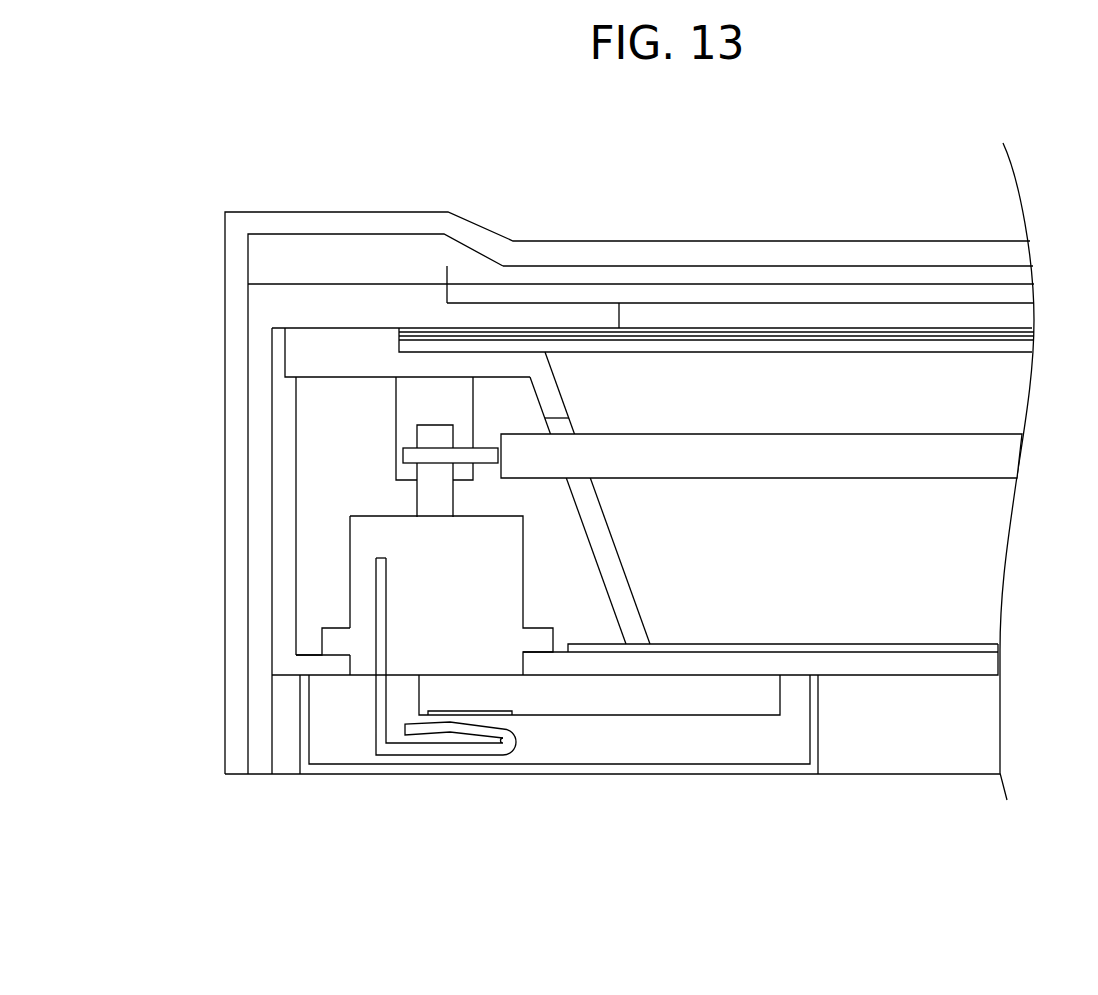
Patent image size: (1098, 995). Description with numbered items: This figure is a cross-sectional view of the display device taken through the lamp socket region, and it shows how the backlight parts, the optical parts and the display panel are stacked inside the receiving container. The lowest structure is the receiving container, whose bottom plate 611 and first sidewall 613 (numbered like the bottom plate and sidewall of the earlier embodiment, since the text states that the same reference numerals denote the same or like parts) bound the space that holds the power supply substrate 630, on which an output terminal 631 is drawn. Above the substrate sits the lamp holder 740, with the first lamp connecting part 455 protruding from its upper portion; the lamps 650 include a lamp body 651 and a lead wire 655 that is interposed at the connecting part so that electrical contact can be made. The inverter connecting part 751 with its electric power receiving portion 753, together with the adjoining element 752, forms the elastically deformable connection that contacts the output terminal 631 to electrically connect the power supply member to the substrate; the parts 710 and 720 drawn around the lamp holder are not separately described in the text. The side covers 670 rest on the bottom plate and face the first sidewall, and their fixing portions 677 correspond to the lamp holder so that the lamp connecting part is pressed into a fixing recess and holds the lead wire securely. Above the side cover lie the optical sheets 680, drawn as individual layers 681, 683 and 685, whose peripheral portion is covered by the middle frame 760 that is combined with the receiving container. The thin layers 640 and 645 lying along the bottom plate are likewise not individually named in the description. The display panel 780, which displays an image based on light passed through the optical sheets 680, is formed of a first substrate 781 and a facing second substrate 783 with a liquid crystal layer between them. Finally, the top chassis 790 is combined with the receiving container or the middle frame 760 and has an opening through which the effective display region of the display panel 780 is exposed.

The first lamp connecting part 455 is at (437, 425).
The bottom chassis bottom plate 611 is at (983, 663).
The sidewall 613 is at (282, 447).
The power supply substrate 630 is at (643, 700).
The protrusion 631 is at (508, 713).
The reflective sheet 640 is at (980, 644).
The bottom cover 645 is at (815, 750).
The lamps 650 is at (712, 383).
The support portion 651 is at (540, 457).
The connecting portion 655 is at (467, 457).
The side covers 670 is at (317, 348).
The fixing bracket 677 is at (412, 400).
The optical sheets 680 is at (716, 237).
The diffusion sheet 681 is at (757, 340).
The prism sheet 683 is at (702, 337).
The protection sheet 685 is at (677, 333).
The light source module 710 is at (330, 595).
The printed circuit board 720 is at (335, 645).
The light source 740 is at (367, 538).
The clip member 751 is at (446, 724).
The clip body 752 is at (412, 750).
The clip tongue 753 is at (478, 730).
The middle frame 760 is at (282, 305).
The display panel 780 is at (740, 225).
The first substrate 781 is at (845, 293).
The second substrate 783 is at (915, 275).
The top chassis 790 is at (233, 236).